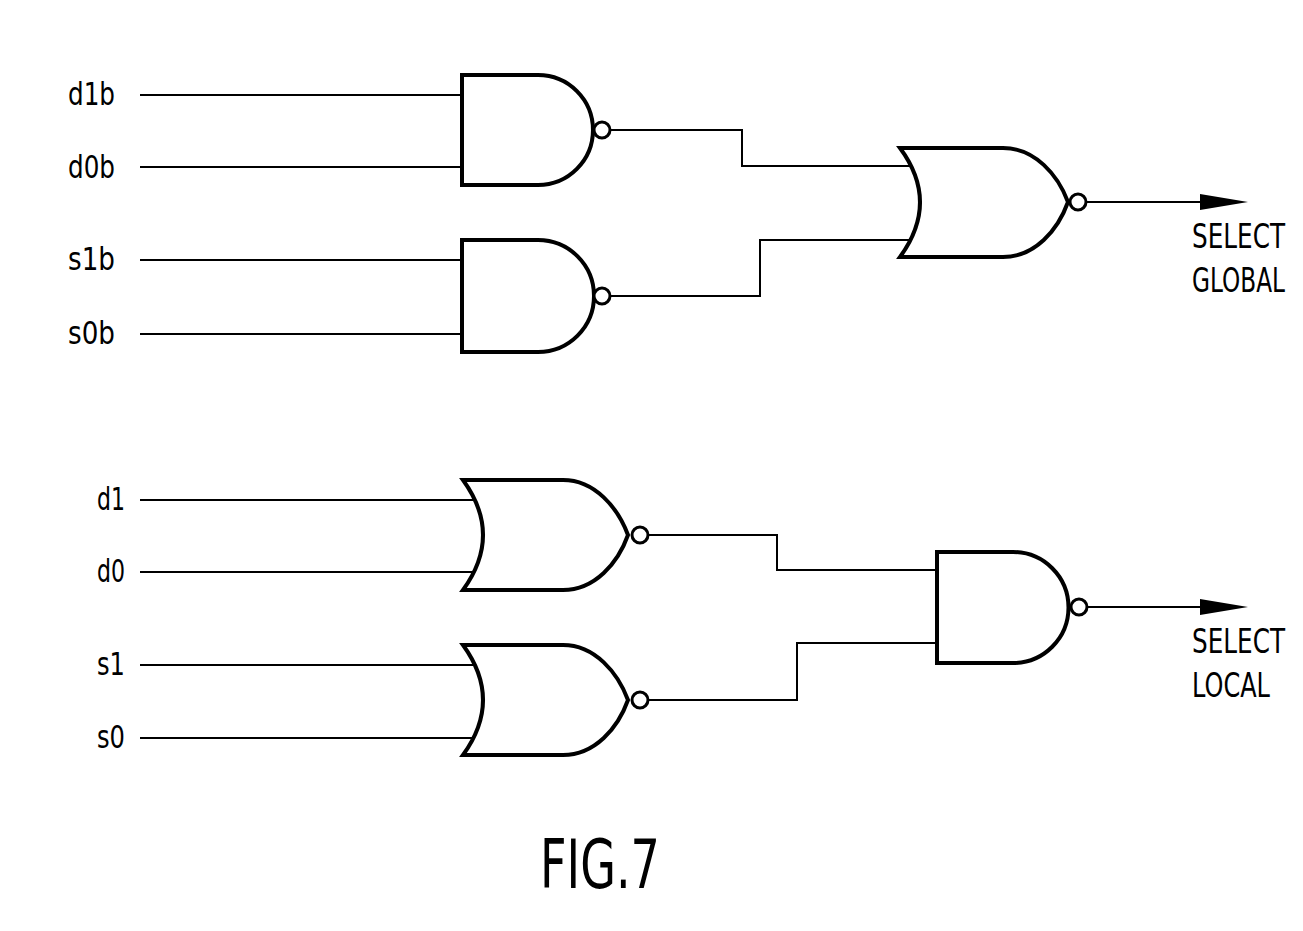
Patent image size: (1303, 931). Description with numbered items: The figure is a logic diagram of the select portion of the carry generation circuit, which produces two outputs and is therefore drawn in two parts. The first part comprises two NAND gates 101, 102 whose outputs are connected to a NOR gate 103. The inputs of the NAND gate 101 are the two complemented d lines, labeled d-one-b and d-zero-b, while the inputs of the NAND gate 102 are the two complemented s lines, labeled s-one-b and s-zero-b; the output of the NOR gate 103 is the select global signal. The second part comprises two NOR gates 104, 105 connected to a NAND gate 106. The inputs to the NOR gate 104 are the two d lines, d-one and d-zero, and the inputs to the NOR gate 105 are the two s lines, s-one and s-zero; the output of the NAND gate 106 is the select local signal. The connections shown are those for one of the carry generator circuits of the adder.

The NAND gate 101 is at (526, 75).
The NAND gate 102 is at (572, 249).
The NOR gate 103 is at (1000, 148).
The NOR gate 104 is at (590, 483).
The NOR gate 105 is at (598, 653).
The NAND gate 106 is at (1013, 552).